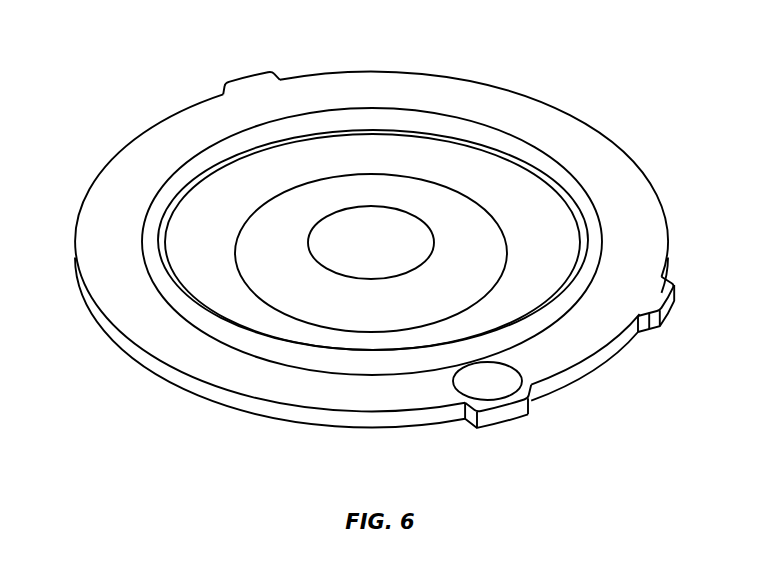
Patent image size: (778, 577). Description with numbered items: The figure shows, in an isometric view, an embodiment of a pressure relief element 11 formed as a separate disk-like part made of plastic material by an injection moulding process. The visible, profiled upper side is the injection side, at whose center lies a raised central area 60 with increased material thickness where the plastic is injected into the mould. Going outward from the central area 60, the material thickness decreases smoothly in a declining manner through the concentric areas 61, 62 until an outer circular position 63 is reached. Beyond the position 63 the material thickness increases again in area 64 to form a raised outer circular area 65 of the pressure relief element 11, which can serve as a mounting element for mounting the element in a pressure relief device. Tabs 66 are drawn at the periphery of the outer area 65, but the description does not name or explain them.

The pressure relief element 11 is at (574, 55).
The raised central area 60 is at (361, 251).
The area 61 is at (312, 306).
The area 62 is at (270, 347).
The outer circular position 63 is at (158, 265).
The area 64 is at (163, 203).
The raised outer circular area 65 is at (217, 383).
The mounting tab 66 is at (246, 78).